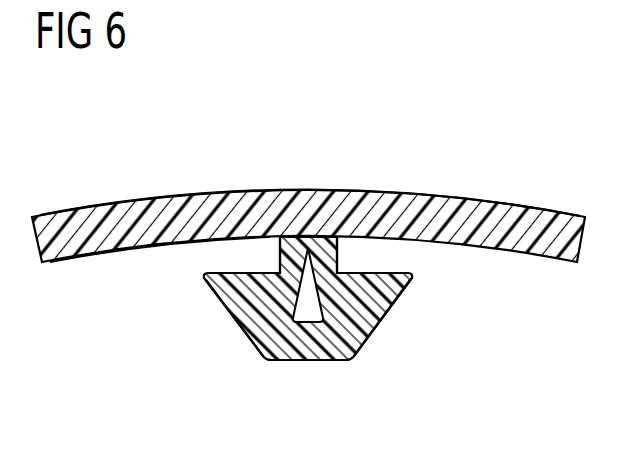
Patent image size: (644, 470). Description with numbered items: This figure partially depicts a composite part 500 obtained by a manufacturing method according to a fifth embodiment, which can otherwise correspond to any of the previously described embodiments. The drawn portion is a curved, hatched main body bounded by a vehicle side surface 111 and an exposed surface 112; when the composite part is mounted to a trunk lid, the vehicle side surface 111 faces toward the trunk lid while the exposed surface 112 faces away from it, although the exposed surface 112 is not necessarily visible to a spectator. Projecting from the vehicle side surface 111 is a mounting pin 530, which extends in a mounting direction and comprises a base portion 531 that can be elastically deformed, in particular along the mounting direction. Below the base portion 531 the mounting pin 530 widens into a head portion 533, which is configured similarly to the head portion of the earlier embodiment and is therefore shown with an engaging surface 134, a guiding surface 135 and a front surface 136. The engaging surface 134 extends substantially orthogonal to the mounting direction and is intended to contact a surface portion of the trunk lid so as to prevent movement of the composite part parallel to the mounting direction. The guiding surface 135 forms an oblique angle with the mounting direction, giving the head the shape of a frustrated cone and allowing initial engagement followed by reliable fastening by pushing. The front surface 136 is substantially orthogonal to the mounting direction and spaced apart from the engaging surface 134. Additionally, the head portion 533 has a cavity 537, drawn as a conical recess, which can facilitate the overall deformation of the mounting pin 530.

The composite part 500 is at (247, 131).
The exposed surface 112 is at (145, 187).
The vehicle side surface 111 is at (132, 256).
The mounting pin 530 is at (256, 318).
The base portion 531 is at (290, 258).
The head portion 533 is at (367, 323).
The engaging surface 134 is at (387, 268).
The guiding surface 135 is at (232, 318).
The front surface 136 is at (305, 360).
The cavity 537 is at (310, 312).